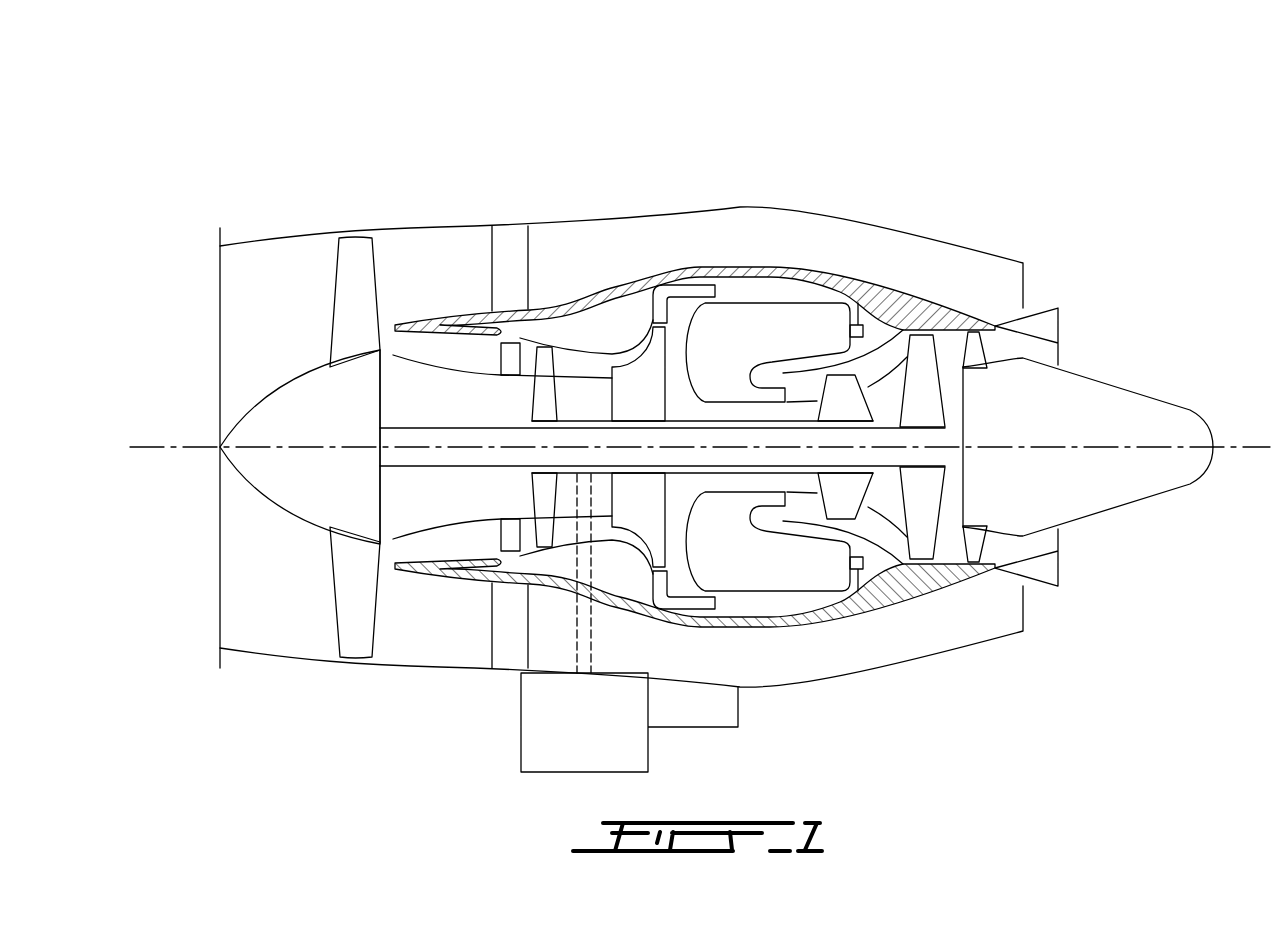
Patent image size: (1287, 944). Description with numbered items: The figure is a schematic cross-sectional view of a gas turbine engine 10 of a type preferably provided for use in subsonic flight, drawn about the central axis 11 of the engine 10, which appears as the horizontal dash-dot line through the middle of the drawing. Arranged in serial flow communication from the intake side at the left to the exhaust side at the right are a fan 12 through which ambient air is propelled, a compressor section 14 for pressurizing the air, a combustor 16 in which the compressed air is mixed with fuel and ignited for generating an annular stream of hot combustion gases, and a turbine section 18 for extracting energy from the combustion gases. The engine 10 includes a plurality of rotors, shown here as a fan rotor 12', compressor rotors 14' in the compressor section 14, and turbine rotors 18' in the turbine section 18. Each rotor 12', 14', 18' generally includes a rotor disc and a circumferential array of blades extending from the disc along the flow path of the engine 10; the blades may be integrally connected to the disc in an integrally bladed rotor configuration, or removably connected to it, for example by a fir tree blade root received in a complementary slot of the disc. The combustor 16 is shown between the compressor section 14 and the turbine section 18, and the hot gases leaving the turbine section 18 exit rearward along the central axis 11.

The gas turbine engine 10 is at (932, 115).
The central axis 11 is at (1246, 447).
The fan 12 is at (259, 420).
The fan rotor 12' is at (292, 592).
The compressor section 14 is at (583, 283).
The compressor rotors 14' is at (552, 621).
The combustor 16 is at (763, 322).
The turbine section 18 is at (881, 601).
The turbine rotors 18' is at (884, 296).